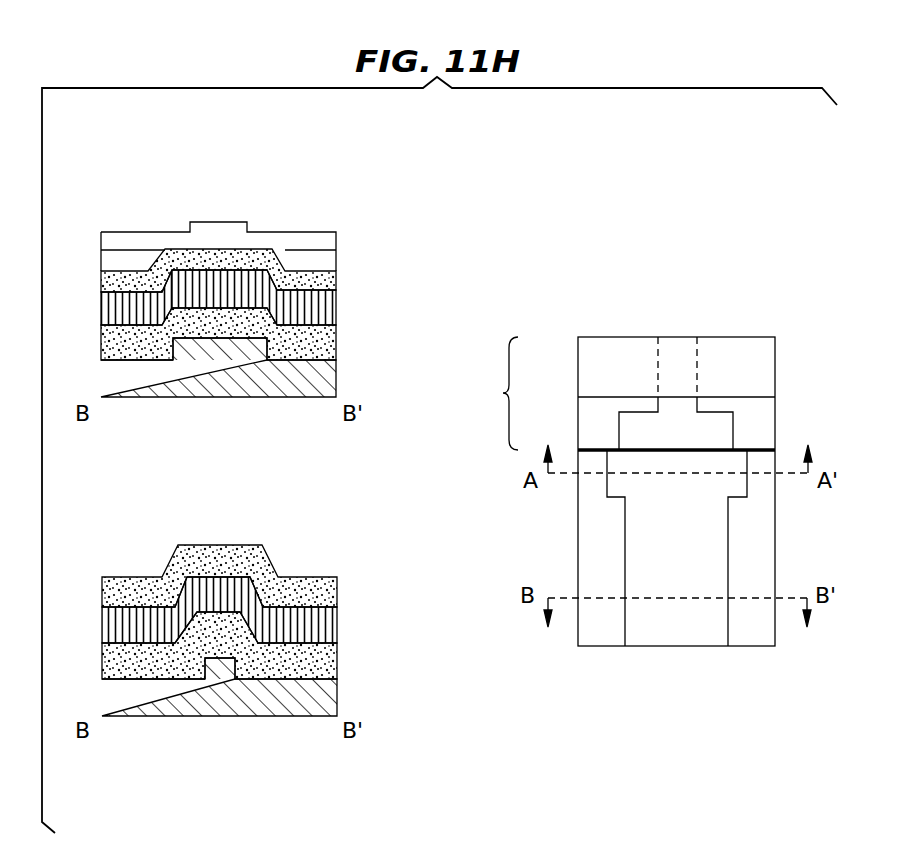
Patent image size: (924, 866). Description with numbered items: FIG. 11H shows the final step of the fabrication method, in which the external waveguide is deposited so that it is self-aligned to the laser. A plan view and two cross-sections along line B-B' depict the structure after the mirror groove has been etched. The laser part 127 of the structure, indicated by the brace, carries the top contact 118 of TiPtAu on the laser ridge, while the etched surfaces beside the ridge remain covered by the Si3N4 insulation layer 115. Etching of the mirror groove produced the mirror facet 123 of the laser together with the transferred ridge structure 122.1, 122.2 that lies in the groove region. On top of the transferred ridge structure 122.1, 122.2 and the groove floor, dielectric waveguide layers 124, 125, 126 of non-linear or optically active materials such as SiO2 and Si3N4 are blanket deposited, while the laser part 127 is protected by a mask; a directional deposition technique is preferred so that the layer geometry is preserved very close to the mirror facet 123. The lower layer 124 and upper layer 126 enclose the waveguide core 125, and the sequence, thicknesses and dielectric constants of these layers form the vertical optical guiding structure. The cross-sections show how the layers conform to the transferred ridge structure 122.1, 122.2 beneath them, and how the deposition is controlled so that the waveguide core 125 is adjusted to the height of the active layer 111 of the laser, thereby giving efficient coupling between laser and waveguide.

The active layer 111 is at (182, 278).
The top contact 118 is at (295, 240).
The dielectric layer 126 is at (337, 273).
The waveguide core 125 is at (337, 308).
The dielectric layer 124 is at (337, 340).
The transferred ridge structure 122.1 is at (218, 347).
The transferred ridge structure 122.2 is at (218, 672).
The insulation layer 115 is at (763, 435).
The mirror facet 123 is at (707, 448).
The laser part 127 is at (598, 393).